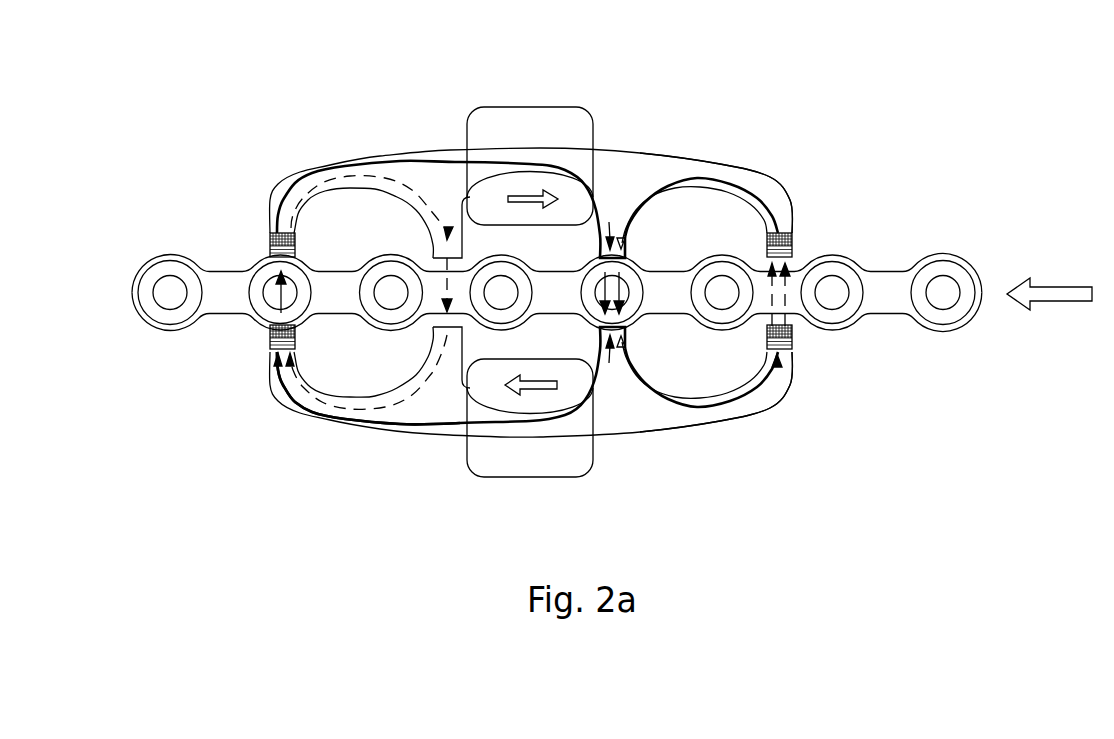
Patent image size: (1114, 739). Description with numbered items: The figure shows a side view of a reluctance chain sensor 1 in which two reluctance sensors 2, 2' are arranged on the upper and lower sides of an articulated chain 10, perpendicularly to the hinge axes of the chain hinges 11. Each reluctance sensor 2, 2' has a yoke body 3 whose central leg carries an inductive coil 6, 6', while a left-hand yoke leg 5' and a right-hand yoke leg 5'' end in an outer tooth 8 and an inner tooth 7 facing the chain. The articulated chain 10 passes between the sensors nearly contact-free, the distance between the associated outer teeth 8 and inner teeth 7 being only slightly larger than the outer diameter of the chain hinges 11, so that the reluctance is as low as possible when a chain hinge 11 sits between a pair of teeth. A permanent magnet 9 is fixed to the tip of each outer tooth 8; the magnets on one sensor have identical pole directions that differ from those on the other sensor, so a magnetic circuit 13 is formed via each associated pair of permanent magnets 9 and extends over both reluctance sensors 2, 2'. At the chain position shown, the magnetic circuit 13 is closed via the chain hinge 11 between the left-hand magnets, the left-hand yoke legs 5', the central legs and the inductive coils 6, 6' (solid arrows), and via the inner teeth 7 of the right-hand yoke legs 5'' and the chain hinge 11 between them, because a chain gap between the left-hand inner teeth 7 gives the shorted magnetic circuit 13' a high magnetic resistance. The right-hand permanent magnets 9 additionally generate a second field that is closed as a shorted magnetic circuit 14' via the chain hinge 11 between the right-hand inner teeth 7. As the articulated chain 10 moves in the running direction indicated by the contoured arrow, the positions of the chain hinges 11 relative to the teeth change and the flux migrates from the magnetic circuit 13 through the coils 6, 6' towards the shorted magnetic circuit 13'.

The reluctance chain sensor 1 is at (217, 217).
The reluctance sensor 2 is at (720, 426).
The reluctance sensor 2' is at (716, 151).
The yoke body 3 is at (613, 160).
The left-hand yoke leg 5' is at (355, 288).
The right-hand yoke leg 5'' is at (706, 288).
The inductive coil 6 is at (530, 447).
The inductive coil 6' is at (530, 136).
The inner tooth 7 is at (432, 238).
The outer tooth 8 is at (271, 230).
The permanent magnet 9 is at (270, 246).
The articulated chain 10 is at (968, 251).
The chain hinge 11 is at (836, 291).
The magnetic circuit 13 is at (368, 418).
The shorted magnetic circuit 13' is at (369, 330).
The shorted magnetic circuit 14' is at (701, 417).